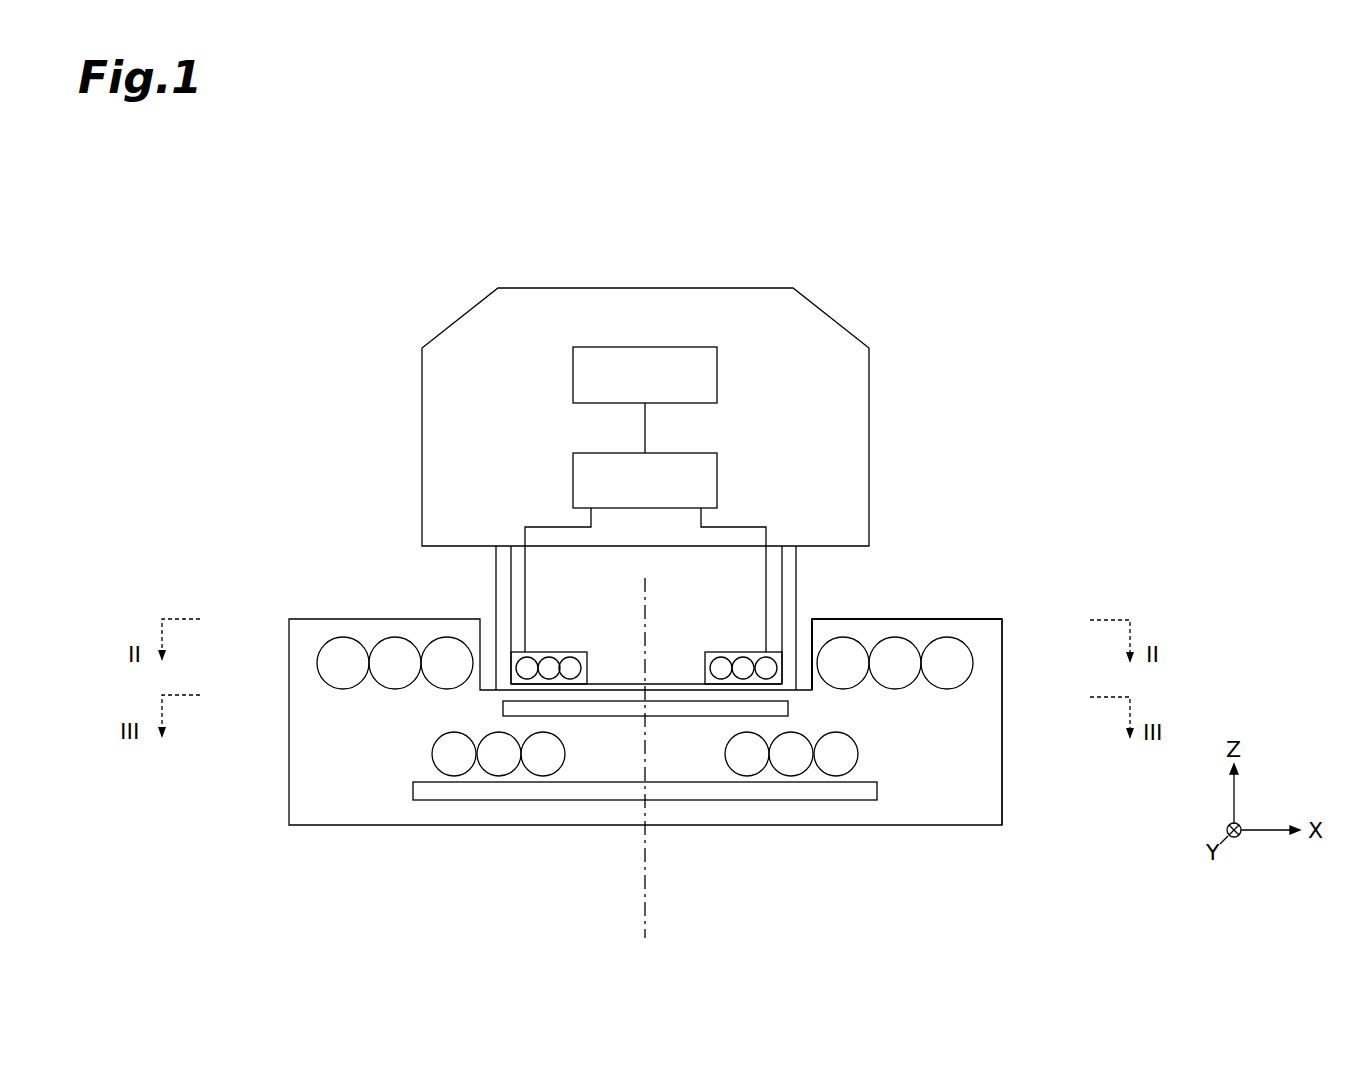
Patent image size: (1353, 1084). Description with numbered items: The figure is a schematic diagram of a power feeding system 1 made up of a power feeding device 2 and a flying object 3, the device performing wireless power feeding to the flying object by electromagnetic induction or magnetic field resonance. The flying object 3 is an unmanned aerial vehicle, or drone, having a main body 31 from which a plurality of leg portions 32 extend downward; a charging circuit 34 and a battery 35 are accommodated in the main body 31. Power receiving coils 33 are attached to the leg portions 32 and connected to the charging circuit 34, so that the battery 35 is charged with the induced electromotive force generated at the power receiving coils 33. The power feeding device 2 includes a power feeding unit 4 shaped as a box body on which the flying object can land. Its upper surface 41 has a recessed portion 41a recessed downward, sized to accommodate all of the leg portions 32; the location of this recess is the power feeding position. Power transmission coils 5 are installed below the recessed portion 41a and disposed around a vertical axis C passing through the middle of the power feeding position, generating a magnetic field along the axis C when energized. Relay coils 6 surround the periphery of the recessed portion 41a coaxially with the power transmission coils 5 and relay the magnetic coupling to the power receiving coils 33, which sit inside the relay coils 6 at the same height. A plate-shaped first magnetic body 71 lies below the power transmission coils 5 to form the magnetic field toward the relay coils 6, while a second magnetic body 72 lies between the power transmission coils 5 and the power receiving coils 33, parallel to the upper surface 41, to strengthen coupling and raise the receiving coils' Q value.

The power feeding system 1 is at (960, 180).
The power feeding device 2 is at (341, 608).
The flying object 3 is at (796, 284).
The main body 31 is at (870, 402).
The leg portions 32 is at (496, 577).
The power receiving coil 33 is at (548, 652).
The charging circuit 34 is at (573, 478).
The battery 35 is at (573, 373).
The power feeding unit 4 is at (1003, 650).
The upper surface 41 is at (943, 619).
The recessed portion 41a is at (804, 648).
The power transmission coil 5 is at (432, 756).
The relay coil 6 is at (318, 660).
The first magnetic body 71 is at (563, 800).
The second magnetic body 72 is at (687, 717).
The axis C is at (645, 920).